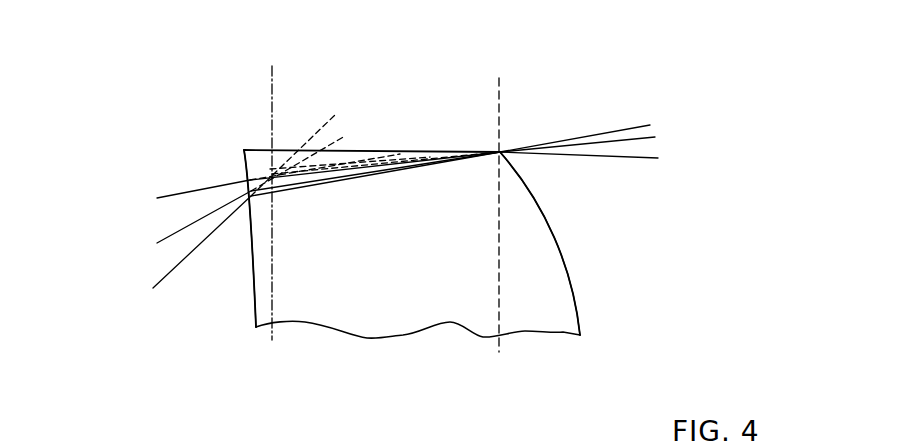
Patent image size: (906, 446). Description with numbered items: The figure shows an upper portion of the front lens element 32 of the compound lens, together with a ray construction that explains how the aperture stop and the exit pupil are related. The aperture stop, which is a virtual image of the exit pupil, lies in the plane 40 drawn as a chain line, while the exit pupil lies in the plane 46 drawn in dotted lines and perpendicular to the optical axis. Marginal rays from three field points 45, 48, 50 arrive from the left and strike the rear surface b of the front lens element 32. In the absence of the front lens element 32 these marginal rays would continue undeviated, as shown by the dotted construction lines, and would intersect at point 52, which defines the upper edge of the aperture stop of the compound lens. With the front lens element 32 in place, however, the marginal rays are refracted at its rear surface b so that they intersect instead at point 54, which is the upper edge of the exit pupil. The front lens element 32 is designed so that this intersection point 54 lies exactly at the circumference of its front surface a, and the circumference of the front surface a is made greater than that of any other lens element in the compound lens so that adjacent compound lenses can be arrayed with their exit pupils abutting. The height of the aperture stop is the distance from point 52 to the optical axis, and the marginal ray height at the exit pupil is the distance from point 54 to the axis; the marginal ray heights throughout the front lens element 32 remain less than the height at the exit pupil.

The front lens element 32 is at (402, 310).
The plane of the aperture stop 40 is at (275, 87).
The field point 45 is at (170, 232).
The plane of the exit pupil 46 is at (498, 85).
The field point 48 is at (183, 192).
The field point 50 is at (168, 277).
The intersection point of marginal rays 52 is at (272, 178).
The intersection point at exit pupil 54 is at (501, 150).
The front surface a is at (553, 235).
The rear surface b is at (255, 310).